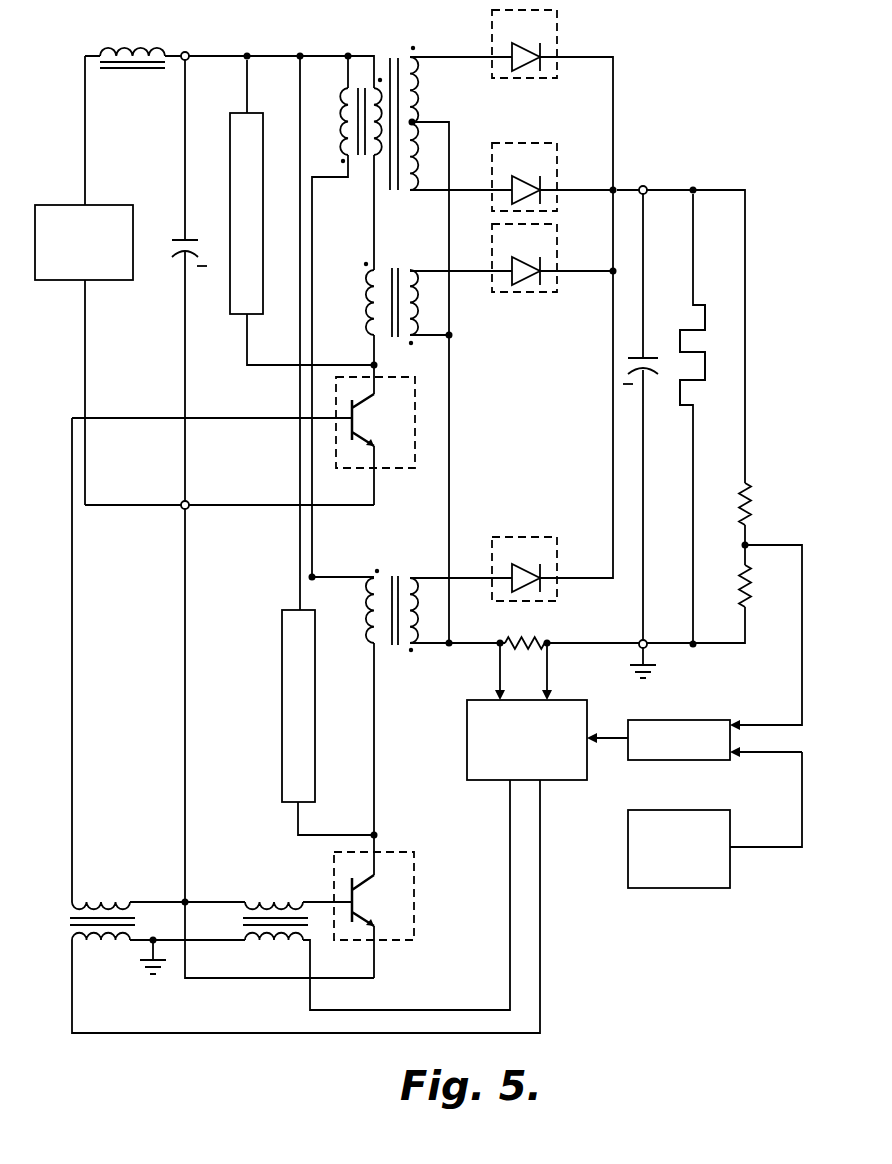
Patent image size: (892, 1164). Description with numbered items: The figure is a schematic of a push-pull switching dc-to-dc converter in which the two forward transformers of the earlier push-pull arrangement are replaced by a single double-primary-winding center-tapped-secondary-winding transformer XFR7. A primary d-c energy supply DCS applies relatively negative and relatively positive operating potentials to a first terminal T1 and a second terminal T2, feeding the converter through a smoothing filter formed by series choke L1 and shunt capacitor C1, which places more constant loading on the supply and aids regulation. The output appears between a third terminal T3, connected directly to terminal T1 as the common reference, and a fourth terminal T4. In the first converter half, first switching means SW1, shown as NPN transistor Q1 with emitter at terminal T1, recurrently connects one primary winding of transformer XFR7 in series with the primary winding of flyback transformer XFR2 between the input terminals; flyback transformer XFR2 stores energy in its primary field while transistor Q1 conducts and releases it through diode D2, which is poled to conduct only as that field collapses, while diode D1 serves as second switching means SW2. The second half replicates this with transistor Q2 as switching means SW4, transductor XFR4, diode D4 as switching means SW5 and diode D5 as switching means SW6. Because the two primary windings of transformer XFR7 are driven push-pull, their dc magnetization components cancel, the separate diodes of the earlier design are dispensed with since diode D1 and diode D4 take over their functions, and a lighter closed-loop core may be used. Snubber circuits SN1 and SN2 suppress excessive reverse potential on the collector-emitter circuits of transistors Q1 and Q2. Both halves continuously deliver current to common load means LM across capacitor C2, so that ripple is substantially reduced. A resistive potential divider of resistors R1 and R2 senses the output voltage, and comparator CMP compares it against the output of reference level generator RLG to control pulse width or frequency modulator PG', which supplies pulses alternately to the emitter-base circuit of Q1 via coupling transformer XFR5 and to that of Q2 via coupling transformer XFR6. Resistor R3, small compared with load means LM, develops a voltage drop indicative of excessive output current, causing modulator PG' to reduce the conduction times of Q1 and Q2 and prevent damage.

The series choke L1 is at (127, 47).
The second terminal T2 is at (187, 52).
The snubber circuit SN1 is at (245, 112).
The primary d-c energy supply DCS is at (104, 186).
The shunt capacitor C1 is at (179, 252).
The first terminal T1 is at (187, 503).
The double-primary-winding center-tapped-secondary-winding transformer XFR7 is at (358, 225).
The flyback transformer XFR2 is at (358, 318).
The NPN transistor Q1 is at (390, 436).
The first switching means SW1 is at (385, 470).
The diode D1 is at (540, 46).
The second switching means SW2 is at (557, 78).
The diode D4 is at (523, 160).
The switching means SW5 is at (556, 165).
The diode D2 is at (523, 242).
The switching means SW4 is at (556, 248).
The fourth terminal T4 is at (643, 186).
The capacitor C2 is at (645, 358).
The load means LM is at (705, 338).
The resistor R1 is at (758, 504).
The resistor R2 is at (758, 586).
The diode D5 is at (523, 550).
The switching means SW6 is at (557, 600).
The resistor R3 is at (505, 638).
The pulse width or frequency modulator PG' is at (517, 728).
The third terminal T3 is at (647, 648).
The comparator CMP is at (701, 720).
The reference level generator RLG is at (632, 812).
The snubber circuit SN2 is at (293, 604).
The transductor XFR4 is at (370, 600).
The transistor Q2 is at (390, 914).
The coupling transformer XFR5 is at (102, 906).
The coupling transformer XFR6 is at (275, 906).